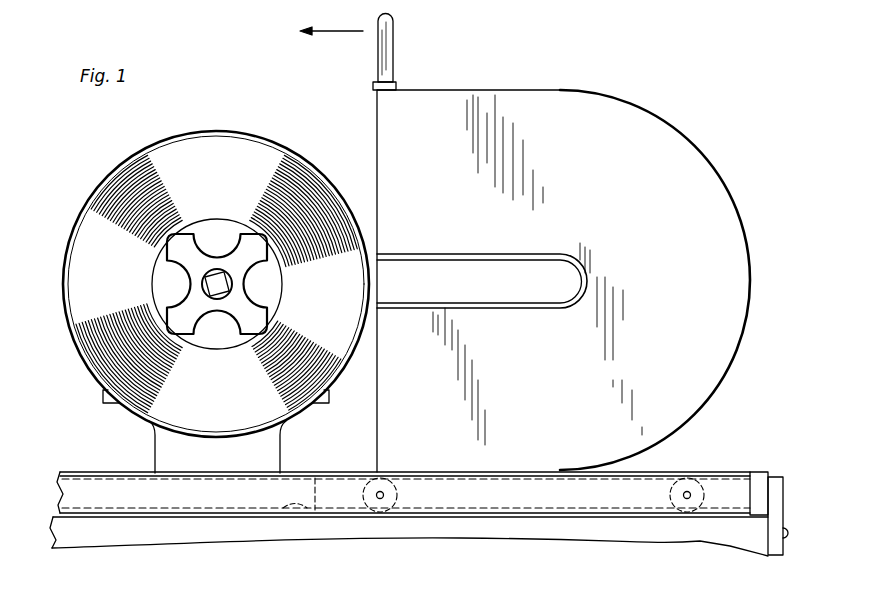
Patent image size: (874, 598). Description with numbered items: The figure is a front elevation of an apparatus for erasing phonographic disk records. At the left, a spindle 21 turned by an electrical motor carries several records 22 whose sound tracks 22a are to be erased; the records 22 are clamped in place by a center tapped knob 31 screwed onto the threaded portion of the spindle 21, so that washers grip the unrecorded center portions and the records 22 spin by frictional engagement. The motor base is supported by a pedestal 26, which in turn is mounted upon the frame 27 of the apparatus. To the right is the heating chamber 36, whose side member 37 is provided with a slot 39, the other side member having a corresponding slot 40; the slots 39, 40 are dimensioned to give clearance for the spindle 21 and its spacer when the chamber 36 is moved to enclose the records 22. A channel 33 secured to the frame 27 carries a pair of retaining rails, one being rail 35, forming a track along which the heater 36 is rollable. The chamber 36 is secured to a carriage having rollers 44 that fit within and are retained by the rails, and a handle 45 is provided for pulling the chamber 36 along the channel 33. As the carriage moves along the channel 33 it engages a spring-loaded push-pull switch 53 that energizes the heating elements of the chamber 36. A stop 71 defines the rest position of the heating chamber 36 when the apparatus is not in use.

The spindle 21 is at (222, 284).
The records 22 is at (278, 170).
The sound tracks 22a is at (130, 183).
The pedestal 26 is at (273, 430).
The frame 27 is at (85, 537).
The center tapped knob 31 is at (178, 292).
The channel 33 is at (92, 503).
The retaining rail 35 is at (287, 488).
The heating chamber 36 is at (664, 119).
The side member 37 is at (710, 185).
The slot 39 is at (495, 254).
The slot 40 is at (437, 258).
The rollers 44 is at (380, 495).
The handle 45 is at (390, 56).
The push-pull switch 53 is at (283, 508).
The stop 71 is at (777, 487).